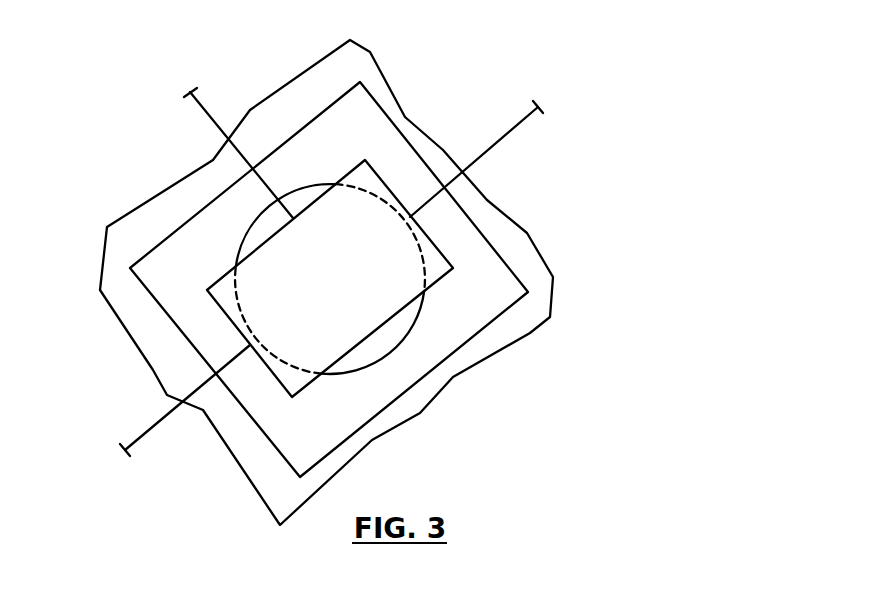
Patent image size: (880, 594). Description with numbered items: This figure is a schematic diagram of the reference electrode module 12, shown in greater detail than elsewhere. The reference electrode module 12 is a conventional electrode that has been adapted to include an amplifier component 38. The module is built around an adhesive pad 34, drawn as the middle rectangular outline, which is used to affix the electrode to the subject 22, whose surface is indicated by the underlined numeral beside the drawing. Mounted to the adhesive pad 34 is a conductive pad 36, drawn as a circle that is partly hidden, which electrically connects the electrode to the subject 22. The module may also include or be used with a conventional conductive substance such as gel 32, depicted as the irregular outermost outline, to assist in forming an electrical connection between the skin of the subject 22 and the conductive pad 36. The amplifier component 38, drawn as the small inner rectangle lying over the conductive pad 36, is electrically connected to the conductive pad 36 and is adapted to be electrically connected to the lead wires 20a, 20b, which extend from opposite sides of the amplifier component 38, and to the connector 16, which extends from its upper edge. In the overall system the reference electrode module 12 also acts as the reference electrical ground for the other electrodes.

The reference electrode module 12 is at (326, 271).
The connector 16 is at (209, 114).
The lead wire 20a is at (133, 440).
The lead wire 20b is at (502, 142).
The subject 22 is at (447, 445).
The gel 32 is at (256, 481).
The adhesive pad 34 is at (178, 228).
The conductive pad 36 is at (385, 350).
The amplifier component 38 is at (306, 394).